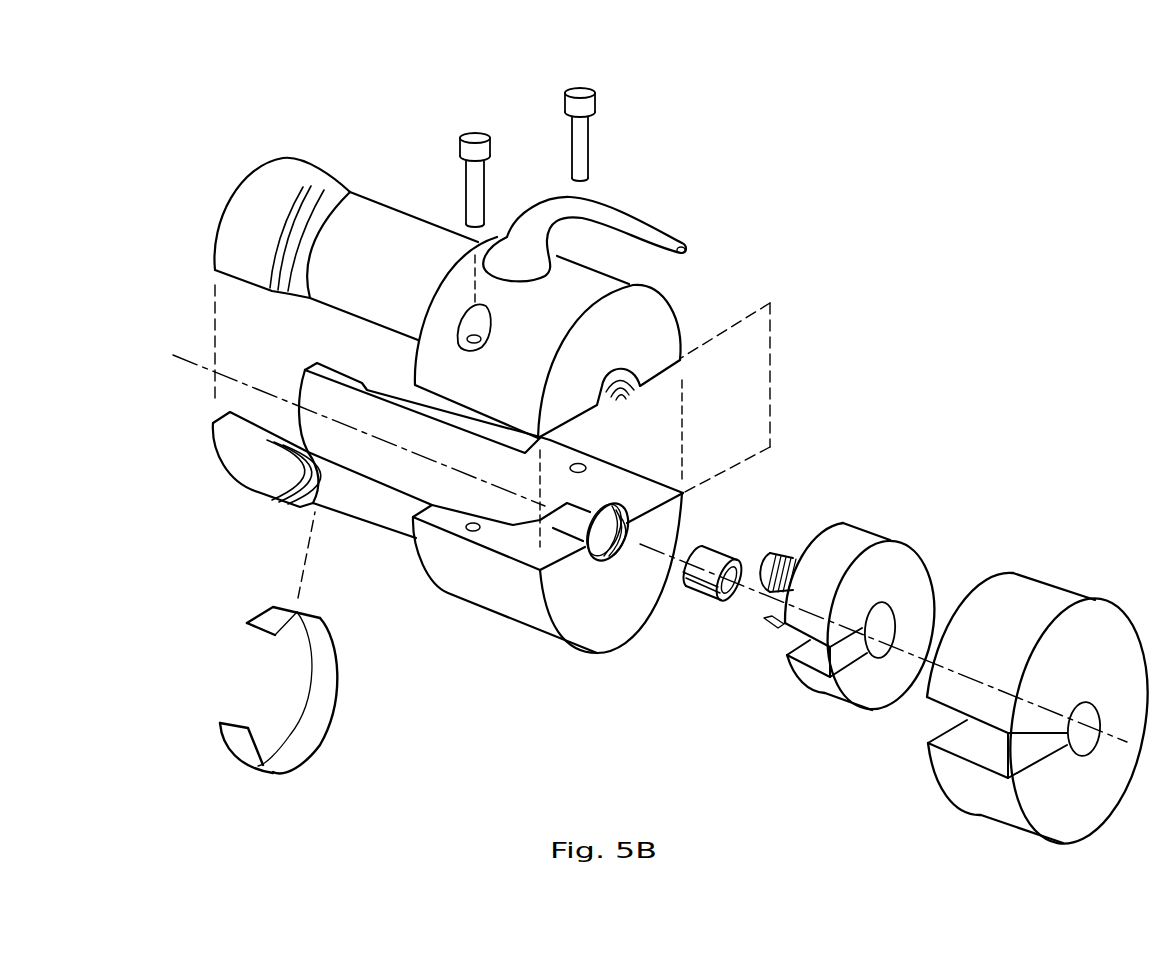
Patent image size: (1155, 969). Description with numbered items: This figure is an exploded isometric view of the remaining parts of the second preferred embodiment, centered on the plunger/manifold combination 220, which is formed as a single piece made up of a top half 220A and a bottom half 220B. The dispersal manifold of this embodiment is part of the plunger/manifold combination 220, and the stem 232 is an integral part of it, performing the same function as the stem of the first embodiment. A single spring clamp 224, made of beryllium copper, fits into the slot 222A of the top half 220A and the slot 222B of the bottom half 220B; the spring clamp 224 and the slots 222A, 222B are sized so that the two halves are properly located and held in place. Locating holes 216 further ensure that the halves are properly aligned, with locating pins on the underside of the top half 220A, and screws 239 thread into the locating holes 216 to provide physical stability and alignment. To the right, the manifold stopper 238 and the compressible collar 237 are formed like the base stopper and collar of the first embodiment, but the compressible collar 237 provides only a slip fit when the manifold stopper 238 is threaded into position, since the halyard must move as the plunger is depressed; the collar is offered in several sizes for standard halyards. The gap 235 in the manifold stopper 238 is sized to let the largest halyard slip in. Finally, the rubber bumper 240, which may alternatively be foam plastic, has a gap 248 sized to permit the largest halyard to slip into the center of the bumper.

The plunger/manifold combination 220 is at (783, 371).
The top half 220A is at (372, 223).
The bottom half 220B is at (580, 636).
The slot 222A is at (322, 215).
The slot 222B is at (298, 468).
The locating holes 216 is at (472, 532).
The spring clamp 224 is at (325, 679).
The stem 232 is at (660, 233).
The gap 235 is at (817, 660).
The compressible collar 237 is at (703, 591).
The manifold stopper 238 is at (855, 535).
The screws 239 is at (582, 141).
The rubber bumper 240 is at (1012, 608).
The gap 248 is at (988, 748).